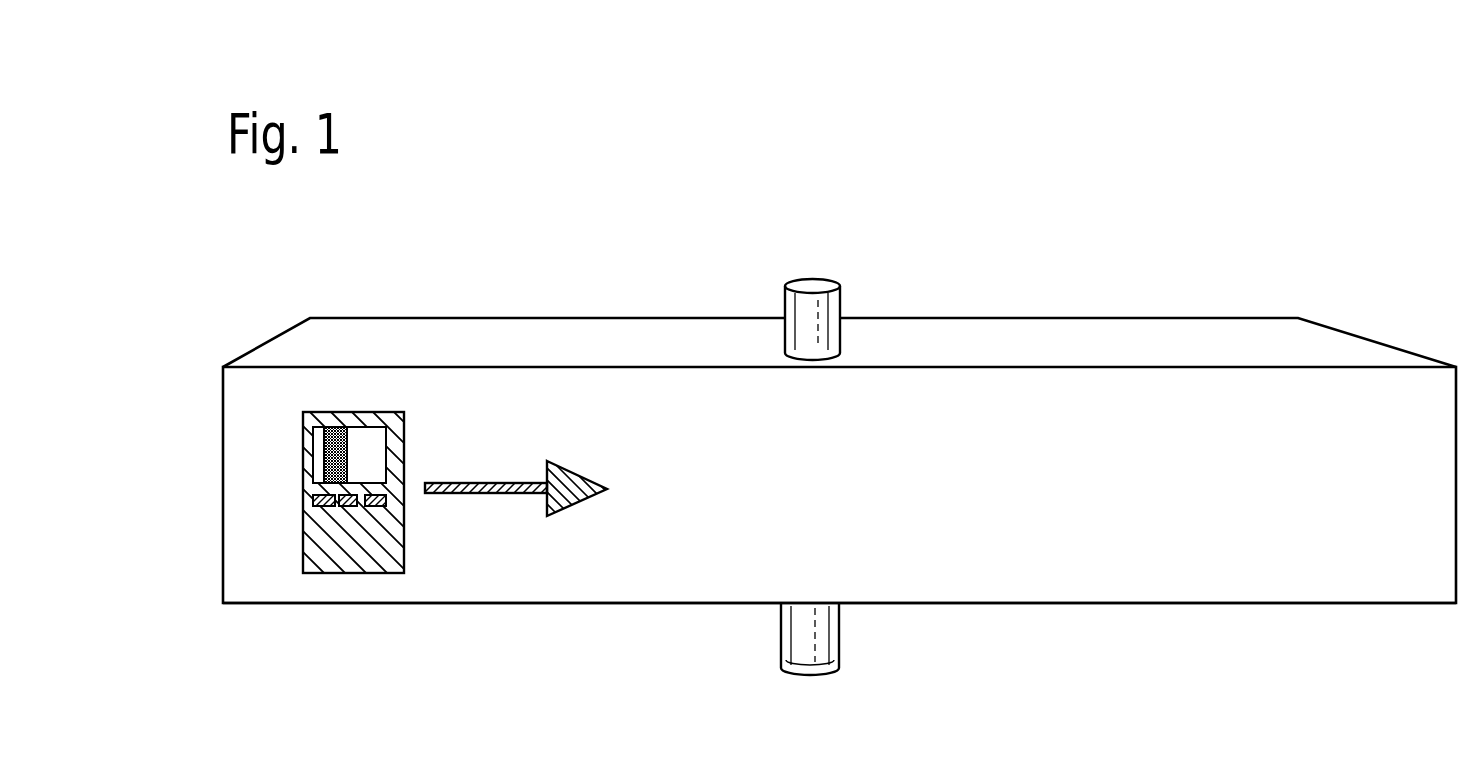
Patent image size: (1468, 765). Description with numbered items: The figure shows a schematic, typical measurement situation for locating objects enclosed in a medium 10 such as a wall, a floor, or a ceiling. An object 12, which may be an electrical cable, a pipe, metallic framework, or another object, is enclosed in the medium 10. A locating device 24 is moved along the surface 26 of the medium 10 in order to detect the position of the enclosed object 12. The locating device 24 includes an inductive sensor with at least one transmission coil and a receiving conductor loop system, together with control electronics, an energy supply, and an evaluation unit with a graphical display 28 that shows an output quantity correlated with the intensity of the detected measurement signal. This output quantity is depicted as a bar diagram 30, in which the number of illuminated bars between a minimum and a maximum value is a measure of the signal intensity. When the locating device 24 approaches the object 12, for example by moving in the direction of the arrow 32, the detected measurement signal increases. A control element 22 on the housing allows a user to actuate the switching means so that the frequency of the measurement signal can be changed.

The medium 10 is at (1220, 405).
The object 12 is at (820, 303).
The control element 22 is at (315, 497).
The locating device 24 is at (340, 530).
The surface 26 is at (1349, 560).
The graphical display 28 is at (367, 450).
The bar diagram 30 is at (326, 443).
The arrow 32 is at (551, 464).